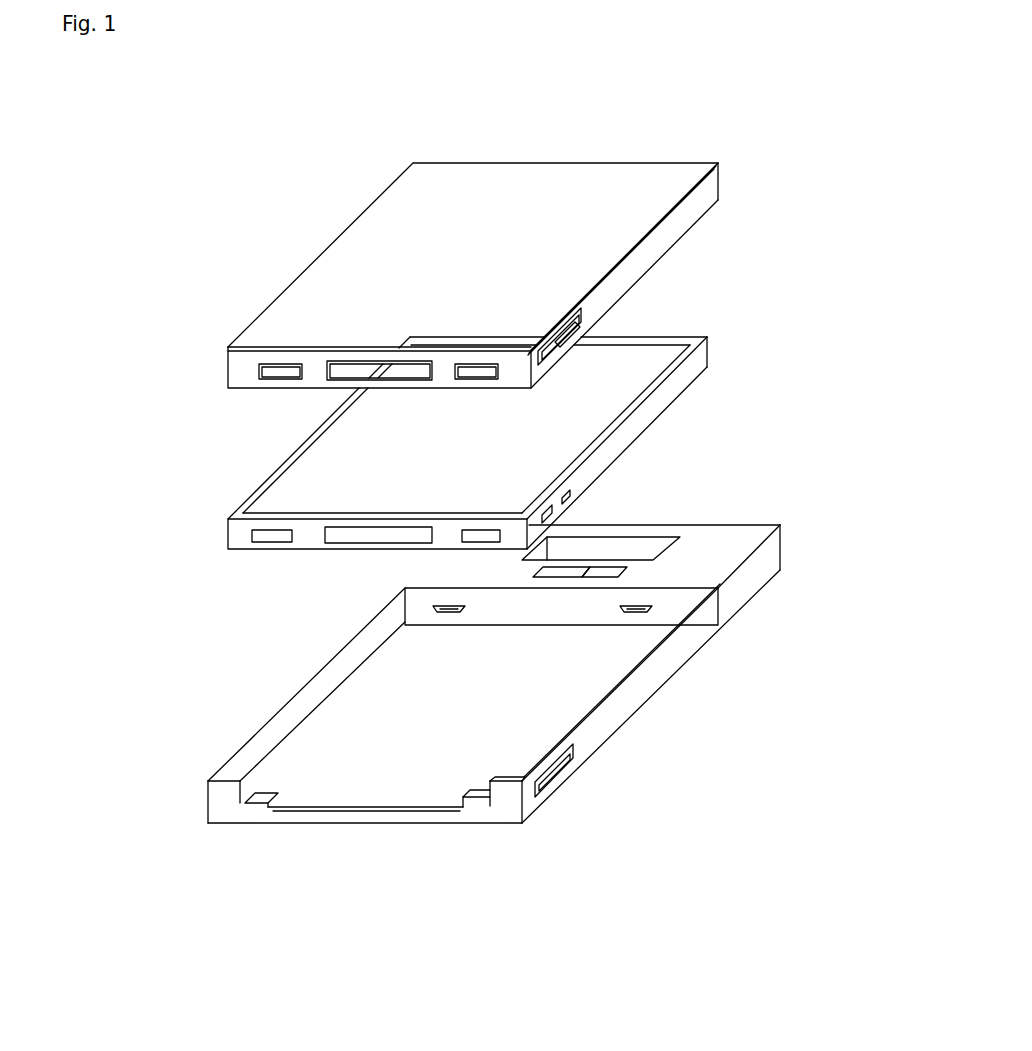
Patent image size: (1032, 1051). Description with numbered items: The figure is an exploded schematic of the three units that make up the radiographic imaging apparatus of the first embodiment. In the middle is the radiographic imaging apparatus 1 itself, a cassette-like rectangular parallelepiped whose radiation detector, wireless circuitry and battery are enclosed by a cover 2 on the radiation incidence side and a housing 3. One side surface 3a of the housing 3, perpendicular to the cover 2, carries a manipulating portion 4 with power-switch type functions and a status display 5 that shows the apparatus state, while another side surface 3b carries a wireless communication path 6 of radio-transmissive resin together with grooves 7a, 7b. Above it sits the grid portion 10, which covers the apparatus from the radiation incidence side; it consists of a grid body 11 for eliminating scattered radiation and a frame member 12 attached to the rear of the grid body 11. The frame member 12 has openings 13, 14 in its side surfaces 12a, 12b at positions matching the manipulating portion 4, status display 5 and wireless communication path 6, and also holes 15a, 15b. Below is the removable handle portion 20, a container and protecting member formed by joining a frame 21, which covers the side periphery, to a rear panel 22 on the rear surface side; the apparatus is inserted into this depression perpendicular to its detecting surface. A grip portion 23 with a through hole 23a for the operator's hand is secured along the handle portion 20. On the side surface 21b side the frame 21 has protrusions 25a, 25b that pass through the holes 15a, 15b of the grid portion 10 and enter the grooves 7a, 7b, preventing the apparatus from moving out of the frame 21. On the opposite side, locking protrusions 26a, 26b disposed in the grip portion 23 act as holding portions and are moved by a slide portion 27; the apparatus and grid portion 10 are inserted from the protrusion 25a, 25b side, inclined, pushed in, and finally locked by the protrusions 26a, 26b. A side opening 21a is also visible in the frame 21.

The radiographic imaging apparatus 1 is at (745, 342).
The cover 2 is at (598, 390).
The housing 3 is at (473, 451).
The side surface 3a is at (618, 438).
The side surface 3b is at (237, 533).
The manipulating portion 4 is at (548, 513).
The status display 5 is at (572, 497).
The wireless communication path 6 is at (355, 538).
The groove 7a is at (283, 533).
The groove 7b is at (485, 535).
The grid portion 10 is at (752, 158).
The grid body 11 is at (490, 170).
The frame member 12 is at (475, 275).
The side surface 12a is at (637, 265).
The side surface 12b is at (235, 372).
The opening 13 is at (583, 333).
The opening 14 is at (371, 370).
The hole 15a is at (286, 368).
The hole 15b is at (475, 368).
The handle portion 20 is at (810, 527).
The frame 21 is at (490, 736).
The side opening 21a is at (592, 733).
The side surface 21b is at (357, 816).
The rear panel 22 is at (588, 650).
The grip portion 23 is at (519, 578).
The through hole 23a is at (637, 543).
The protrusion 25a is at (258, 798).
The protrusion 25b is at (476, 797).
The protrusion 26a is at (445, 608).
The protrusion 26b is at (623, 610).
The slide portion 27 is at (718, 562).